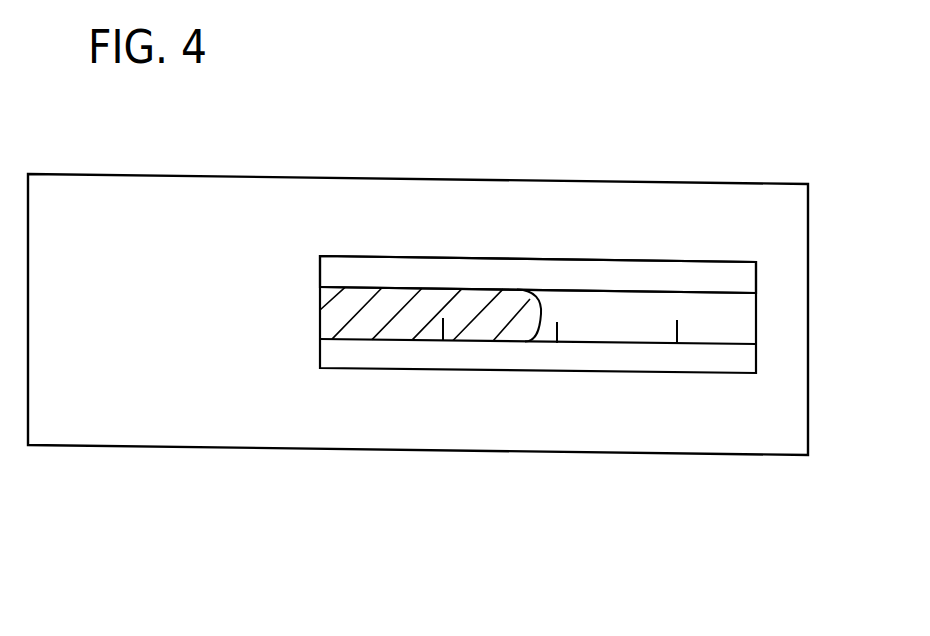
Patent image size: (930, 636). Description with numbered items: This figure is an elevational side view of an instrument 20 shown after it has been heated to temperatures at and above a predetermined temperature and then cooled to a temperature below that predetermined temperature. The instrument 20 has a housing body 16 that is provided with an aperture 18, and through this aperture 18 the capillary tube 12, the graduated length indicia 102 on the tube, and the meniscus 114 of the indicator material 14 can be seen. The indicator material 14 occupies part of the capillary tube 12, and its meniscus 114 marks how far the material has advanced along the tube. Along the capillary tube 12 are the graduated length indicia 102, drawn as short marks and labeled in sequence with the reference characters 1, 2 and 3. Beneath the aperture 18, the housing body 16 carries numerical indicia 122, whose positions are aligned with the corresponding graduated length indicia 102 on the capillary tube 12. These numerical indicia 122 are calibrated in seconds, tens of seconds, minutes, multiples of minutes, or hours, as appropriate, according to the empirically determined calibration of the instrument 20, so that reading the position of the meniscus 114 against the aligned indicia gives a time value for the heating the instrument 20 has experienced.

The housing body 16 is at (528, 203).
The aperture 18 is at (720, 262).
The capillary tube 12 is at (743, 315).
The indicator material 14 is at (360, 330).
The meniscus 114 is at (543, 318).
The numerical indicia 122 is at (462, 393).
The graduated length indicia 102 is at (565, 325).
The first mark 1 is at (443, 363).
The second mark 2 is at (554, 365).
The third mark 3 is at (676, 366).
The instrument 20 is at (430, 602).